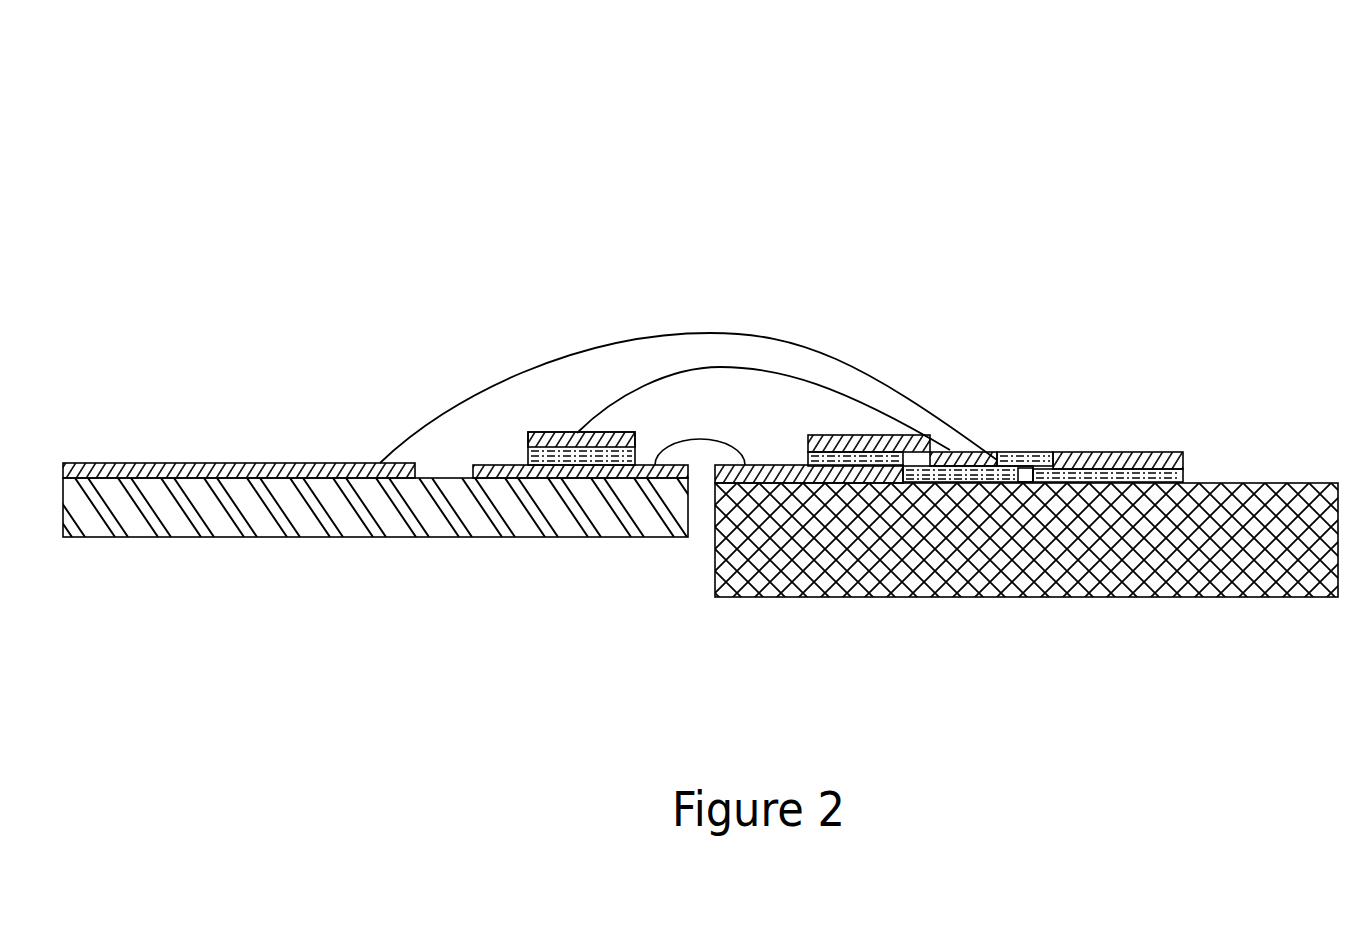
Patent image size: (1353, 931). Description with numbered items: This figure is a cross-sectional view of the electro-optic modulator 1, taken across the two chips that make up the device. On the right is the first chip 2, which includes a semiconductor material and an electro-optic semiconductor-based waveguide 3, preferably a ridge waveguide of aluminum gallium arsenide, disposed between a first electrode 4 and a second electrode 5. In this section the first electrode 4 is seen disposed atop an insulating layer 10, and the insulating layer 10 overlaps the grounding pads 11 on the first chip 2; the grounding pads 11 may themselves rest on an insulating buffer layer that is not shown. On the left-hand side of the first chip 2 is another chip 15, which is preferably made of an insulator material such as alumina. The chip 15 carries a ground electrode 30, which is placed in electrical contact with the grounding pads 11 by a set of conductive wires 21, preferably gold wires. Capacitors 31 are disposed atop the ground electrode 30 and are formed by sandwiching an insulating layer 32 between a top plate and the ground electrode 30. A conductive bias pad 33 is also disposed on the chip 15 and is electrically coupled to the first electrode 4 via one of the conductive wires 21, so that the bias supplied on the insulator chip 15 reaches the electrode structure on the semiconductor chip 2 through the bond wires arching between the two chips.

The electro-optic modulator 1 is at (493, 156).
The first chip 2 is at (895, 597).
The semiconductor-based waveguide 3 is at (1027, 452).
The first electrode 4 is at (862, 435).
The second electrode 5 is at (1065, 456).
The insulating layer 10 is at (1183, 478).
The grounding pads 11 is at (805, 465).
The chip 15 is at (385, 534).
The conductive wires 21 is at (668, 378).
The ground electrode 30 is at (486, 466).
The capacitors 31 is at (615, 433).
The insulating layer 32 is at (528, 454).
The conductive bias pad 33 is at (345, 462).